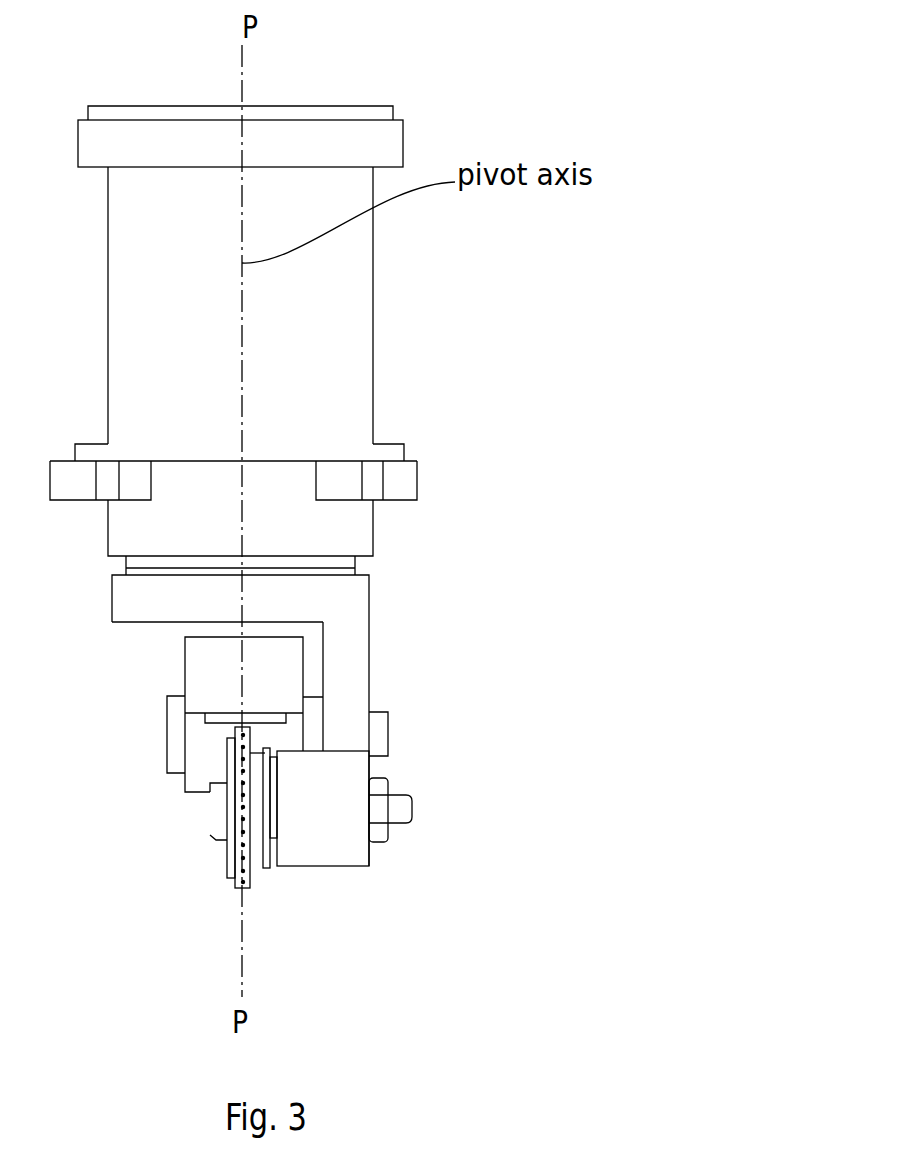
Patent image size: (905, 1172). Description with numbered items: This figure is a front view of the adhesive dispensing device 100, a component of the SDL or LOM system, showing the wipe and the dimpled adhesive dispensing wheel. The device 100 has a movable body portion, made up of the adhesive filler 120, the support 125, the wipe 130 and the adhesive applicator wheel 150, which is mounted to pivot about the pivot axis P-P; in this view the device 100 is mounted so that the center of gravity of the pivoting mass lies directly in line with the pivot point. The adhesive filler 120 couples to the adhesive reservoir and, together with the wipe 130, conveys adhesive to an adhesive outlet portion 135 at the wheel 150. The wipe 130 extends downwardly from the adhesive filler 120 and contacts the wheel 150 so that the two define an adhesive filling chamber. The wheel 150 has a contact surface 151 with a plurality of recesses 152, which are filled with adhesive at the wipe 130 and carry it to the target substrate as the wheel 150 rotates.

The adhesive dispensing device 100 is at (466, 457).
The adhesive filler 120 is at (423, 594).
The support 125 is at (355, 668).
The wipe 130 is at (195, 668).
The adhesive outlet portion 135 is at (225, 722).
The adhesive applicator wheel 150 is at (237, 878).
The contact surface 151 is at (250, 808).
The recesses 152 is at (250, 855).